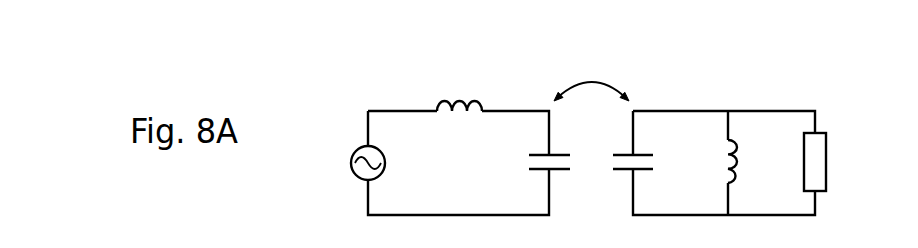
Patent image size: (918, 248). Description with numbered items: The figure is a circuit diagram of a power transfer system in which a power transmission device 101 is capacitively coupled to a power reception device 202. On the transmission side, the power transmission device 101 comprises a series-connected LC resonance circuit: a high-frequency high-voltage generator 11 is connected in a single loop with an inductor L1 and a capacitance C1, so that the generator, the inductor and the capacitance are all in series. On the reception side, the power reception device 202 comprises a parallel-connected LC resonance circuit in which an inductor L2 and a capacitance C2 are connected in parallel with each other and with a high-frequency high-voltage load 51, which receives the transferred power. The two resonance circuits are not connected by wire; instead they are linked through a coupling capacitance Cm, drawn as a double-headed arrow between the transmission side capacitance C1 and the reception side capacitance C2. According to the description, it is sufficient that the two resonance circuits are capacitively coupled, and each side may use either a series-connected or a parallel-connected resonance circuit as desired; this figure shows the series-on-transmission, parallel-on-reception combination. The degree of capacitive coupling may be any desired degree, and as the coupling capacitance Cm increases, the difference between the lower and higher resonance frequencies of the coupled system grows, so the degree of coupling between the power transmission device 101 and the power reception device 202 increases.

The high-frequency high-voltage generator 11 is at (350, 163).
The high-frequency high-voltage load 51 is at (828, 160).
The power transmission device 101 is at (355, 43).
The power reception device 202 is at (598, 43).
The inductor L1 is at (459, 88).
The capacitance C1 is at (528, 162).
The coupling capacitance Cm is at (591, 76).
The capacitance C2 is at (655, 162).
The inductor L2 is at (750, 161).